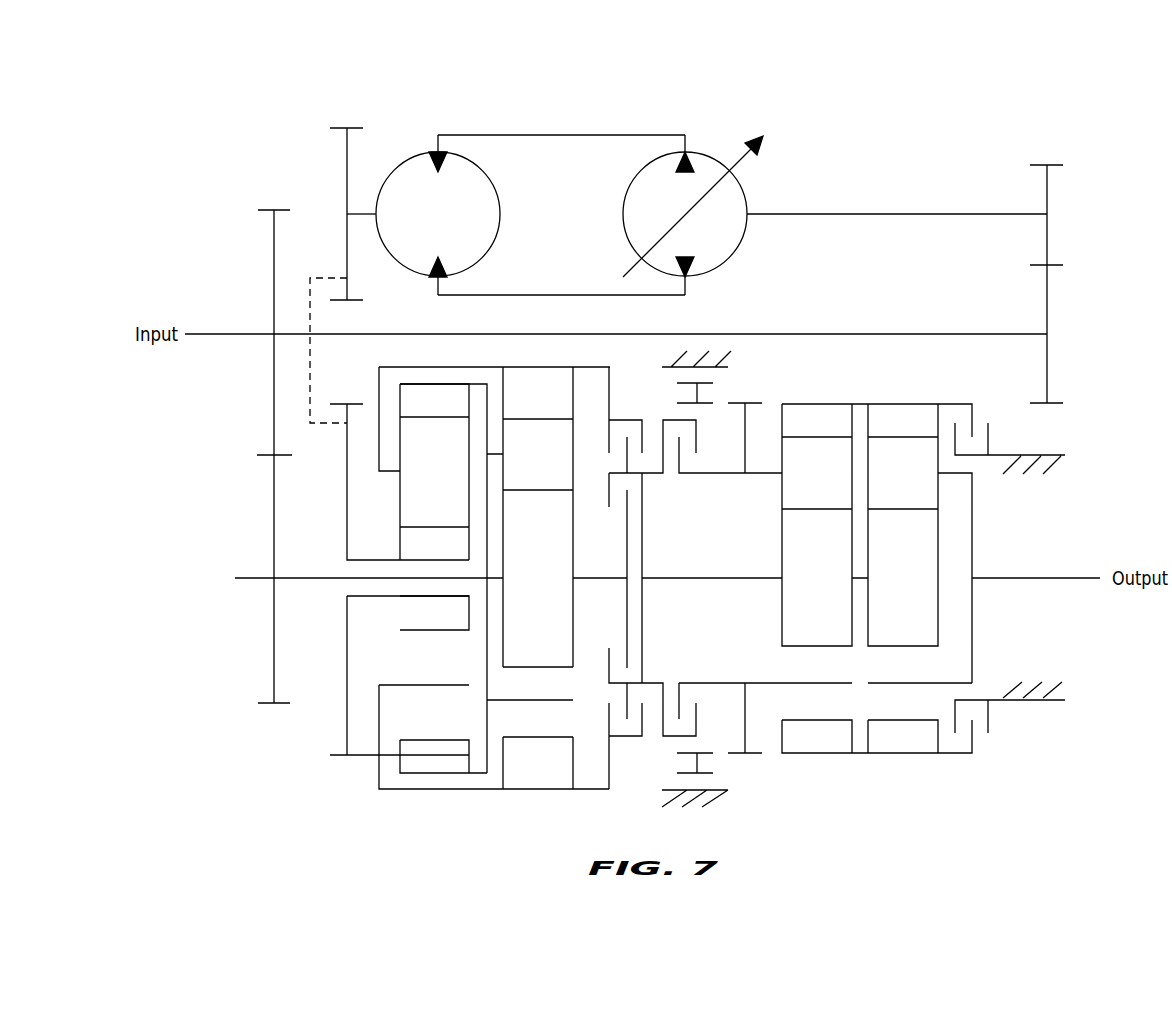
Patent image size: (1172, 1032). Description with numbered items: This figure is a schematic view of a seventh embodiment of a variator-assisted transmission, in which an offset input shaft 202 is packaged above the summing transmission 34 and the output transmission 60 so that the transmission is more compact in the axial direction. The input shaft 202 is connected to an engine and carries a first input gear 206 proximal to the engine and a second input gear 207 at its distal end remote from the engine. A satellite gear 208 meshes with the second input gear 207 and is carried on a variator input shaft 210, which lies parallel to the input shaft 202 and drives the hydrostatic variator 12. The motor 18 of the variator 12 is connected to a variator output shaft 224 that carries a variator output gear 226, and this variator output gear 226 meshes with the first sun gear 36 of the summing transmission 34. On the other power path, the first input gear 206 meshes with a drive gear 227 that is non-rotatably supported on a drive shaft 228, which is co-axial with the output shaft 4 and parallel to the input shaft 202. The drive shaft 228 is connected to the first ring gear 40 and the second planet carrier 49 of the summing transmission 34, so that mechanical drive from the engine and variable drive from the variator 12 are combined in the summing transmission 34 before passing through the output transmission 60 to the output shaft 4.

The output shaft 4 is at (1050, 578).
The hydrostatic variator 12 is at (580, 126).
The motor 18 is at (500, 228).
The summing transmission 34 is at (490, 806).
The first sun gear 36 is at (400, 545).
The first ring gear 40 is at (422, 773).
The second planet carrier 49 is at (490, 455).
The output transmission 60 is at (856, 772).
The input shaft 202 is at (213, 334).
The first input gear 206 is at (274, 388).
The second input gear 207 is at (1047, 295).
The satellite gear 208 is at (1047, 190).
The variator input shaft 210 is at (889, 213).
The variator output shaft 224 is at (360, 213).
The variator output gear 226 is at (347, 182).
The drive gear 227 is at (274, 657).
The drive shaft 228 is at (314, 578).